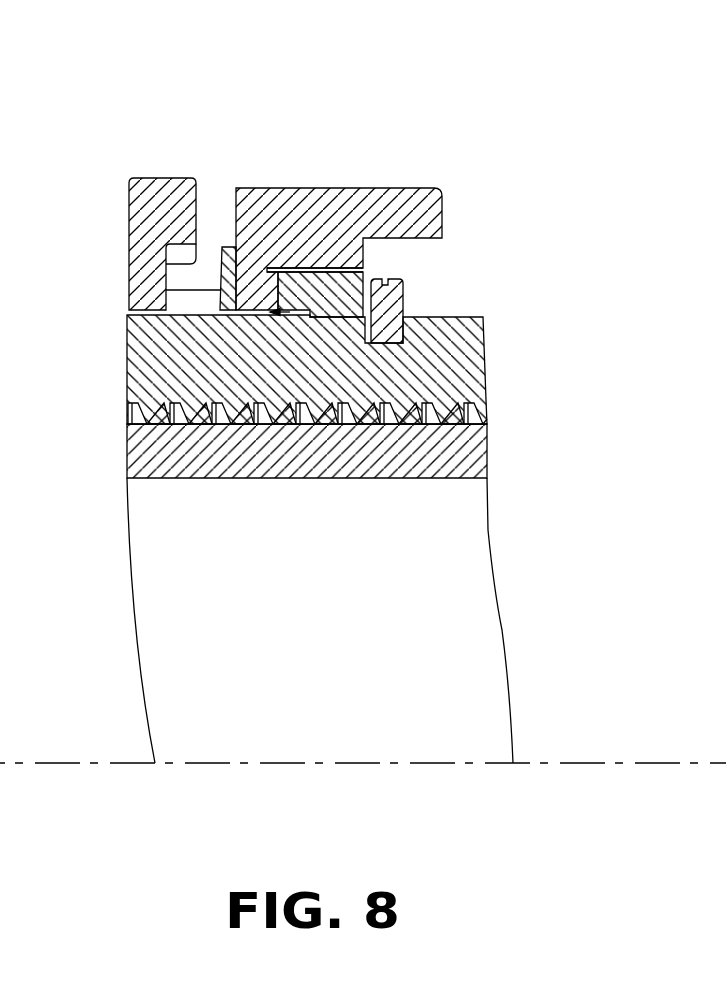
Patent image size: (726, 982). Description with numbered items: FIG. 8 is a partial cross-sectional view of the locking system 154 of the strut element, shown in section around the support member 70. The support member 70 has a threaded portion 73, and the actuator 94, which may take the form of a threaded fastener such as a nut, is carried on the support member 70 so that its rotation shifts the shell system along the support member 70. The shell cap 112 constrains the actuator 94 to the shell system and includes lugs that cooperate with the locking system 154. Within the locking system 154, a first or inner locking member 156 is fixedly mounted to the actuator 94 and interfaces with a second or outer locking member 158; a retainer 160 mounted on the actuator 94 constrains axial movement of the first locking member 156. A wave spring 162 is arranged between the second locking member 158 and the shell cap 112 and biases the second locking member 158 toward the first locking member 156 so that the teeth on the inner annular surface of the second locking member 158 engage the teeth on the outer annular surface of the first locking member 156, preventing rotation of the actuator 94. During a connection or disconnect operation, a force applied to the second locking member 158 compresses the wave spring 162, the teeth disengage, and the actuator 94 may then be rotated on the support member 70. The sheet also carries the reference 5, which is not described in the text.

The gap 5 is at (314, 282).
The support member 70 is at (522, 651).
The threaded portion 73 is at (460, 457).
The actuator 94 is at (457, 363).
The shell cap 112 is at (130, 148).
The locking system 154 is at (336, 170).
The first locking member 156 is at (363, 273).
The second locking member 158 is at (289, 210).
The retainer 160 is at (403, 303).
The wave spring 162 is at (190, 297).